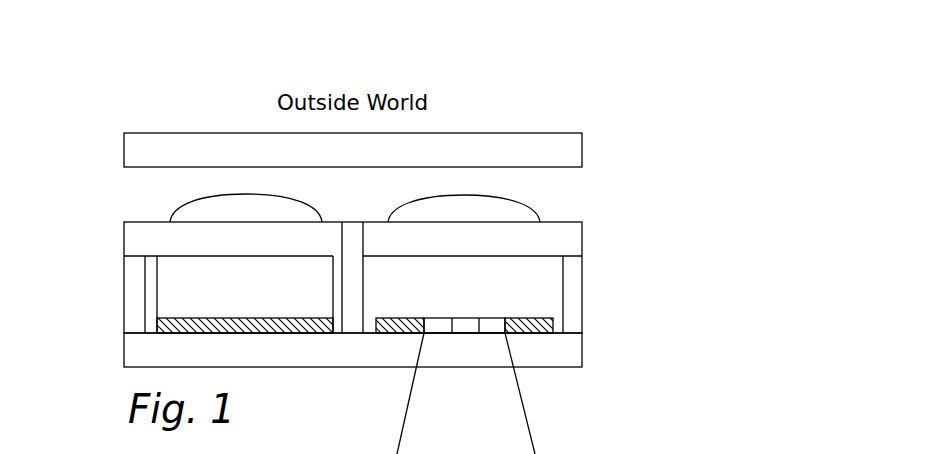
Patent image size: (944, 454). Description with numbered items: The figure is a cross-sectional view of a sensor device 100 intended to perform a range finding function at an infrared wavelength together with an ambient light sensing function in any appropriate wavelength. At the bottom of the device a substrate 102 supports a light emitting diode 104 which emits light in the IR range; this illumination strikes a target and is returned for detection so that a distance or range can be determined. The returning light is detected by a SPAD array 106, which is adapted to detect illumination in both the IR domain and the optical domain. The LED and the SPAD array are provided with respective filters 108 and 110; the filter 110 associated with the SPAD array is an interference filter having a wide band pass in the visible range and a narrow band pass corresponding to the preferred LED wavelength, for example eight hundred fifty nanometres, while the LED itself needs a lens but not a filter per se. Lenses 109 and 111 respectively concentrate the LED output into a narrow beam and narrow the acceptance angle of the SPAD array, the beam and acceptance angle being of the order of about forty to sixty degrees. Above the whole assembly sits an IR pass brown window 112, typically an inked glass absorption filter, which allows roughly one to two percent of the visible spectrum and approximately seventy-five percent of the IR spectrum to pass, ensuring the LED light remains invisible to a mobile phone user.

The sensor device 100 is at (636, 97).
The substrate 102 is at (582, 352).
The light emitting diode 104 is at (148, 291).
The SPAD array 106 is at (540, 317).
The filter 108 is at (325, 222).
The lens 109 is at (172, 219).
The filter 110 is at (573, 222).
The lens 111 is at (488, 194).
The IR pass brown window 112 is at (505, 133).